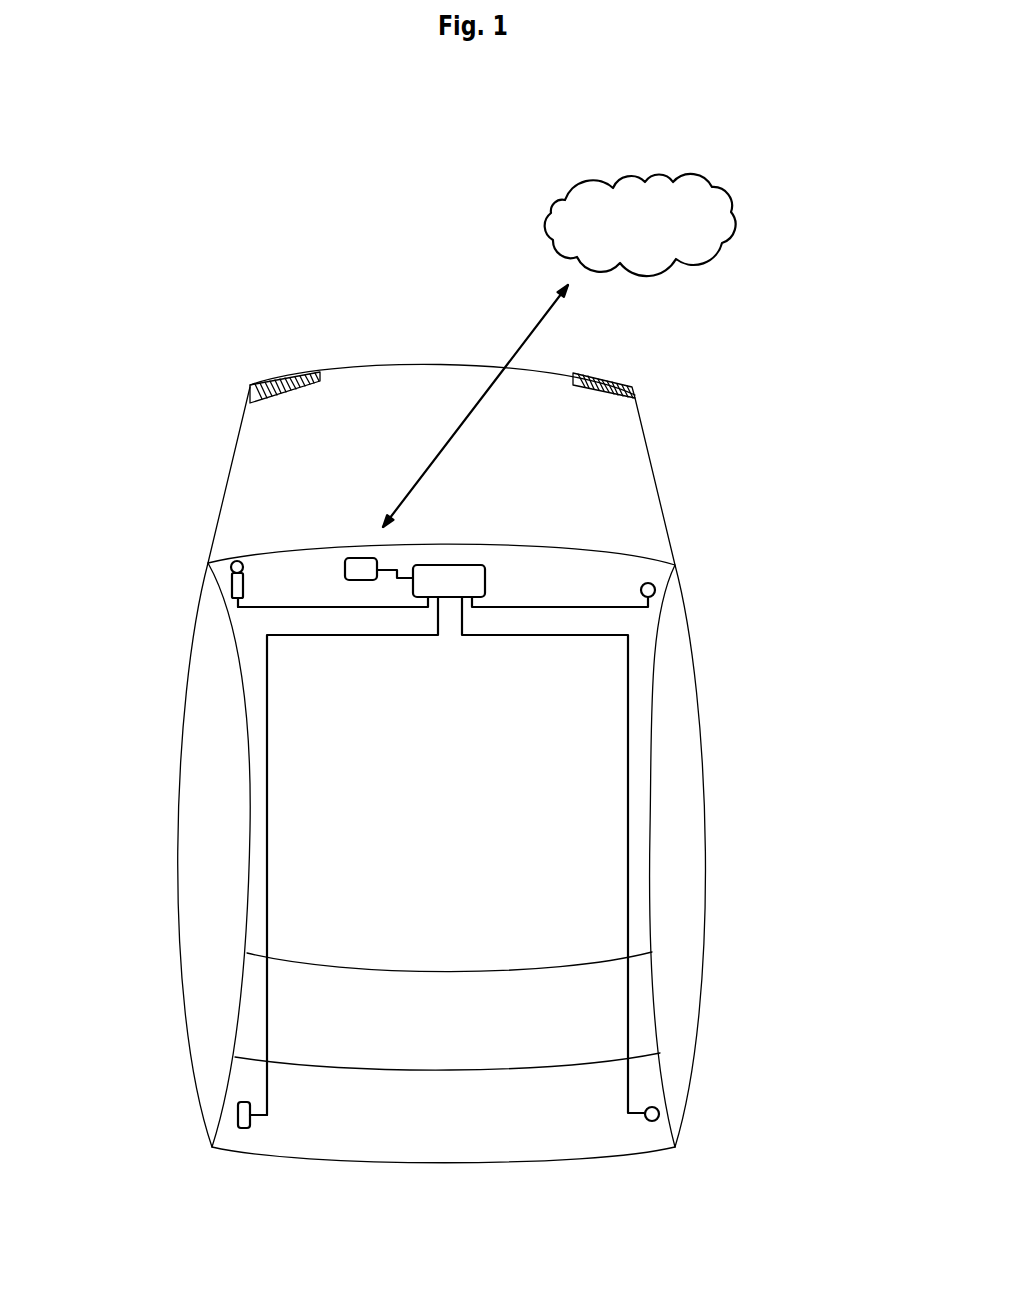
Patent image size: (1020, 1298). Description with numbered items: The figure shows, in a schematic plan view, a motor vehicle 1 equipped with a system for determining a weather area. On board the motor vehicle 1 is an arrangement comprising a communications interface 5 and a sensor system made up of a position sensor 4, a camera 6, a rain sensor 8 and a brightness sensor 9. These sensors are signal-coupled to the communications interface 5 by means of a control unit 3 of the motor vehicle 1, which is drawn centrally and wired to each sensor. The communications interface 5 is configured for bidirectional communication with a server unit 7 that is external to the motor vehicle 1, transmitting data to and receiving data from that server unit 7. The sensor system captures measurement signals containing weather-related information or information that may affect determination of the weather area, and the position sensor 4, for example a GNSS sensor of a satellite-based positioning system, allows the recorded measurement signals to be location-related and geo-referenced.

The motor vehicle 1 is at (181, 308).
The control unit 3 is at (466, 581).
The position sensor 4 is at (240, 1108).
The communications interface 5 is at (362, 558).
The camera 6 is at (232, 582).
The server unit 7 is at (697, 192).
The rain sensor 8 is at (654, 586).
The brightness sensor 9 is at (659, 1116).